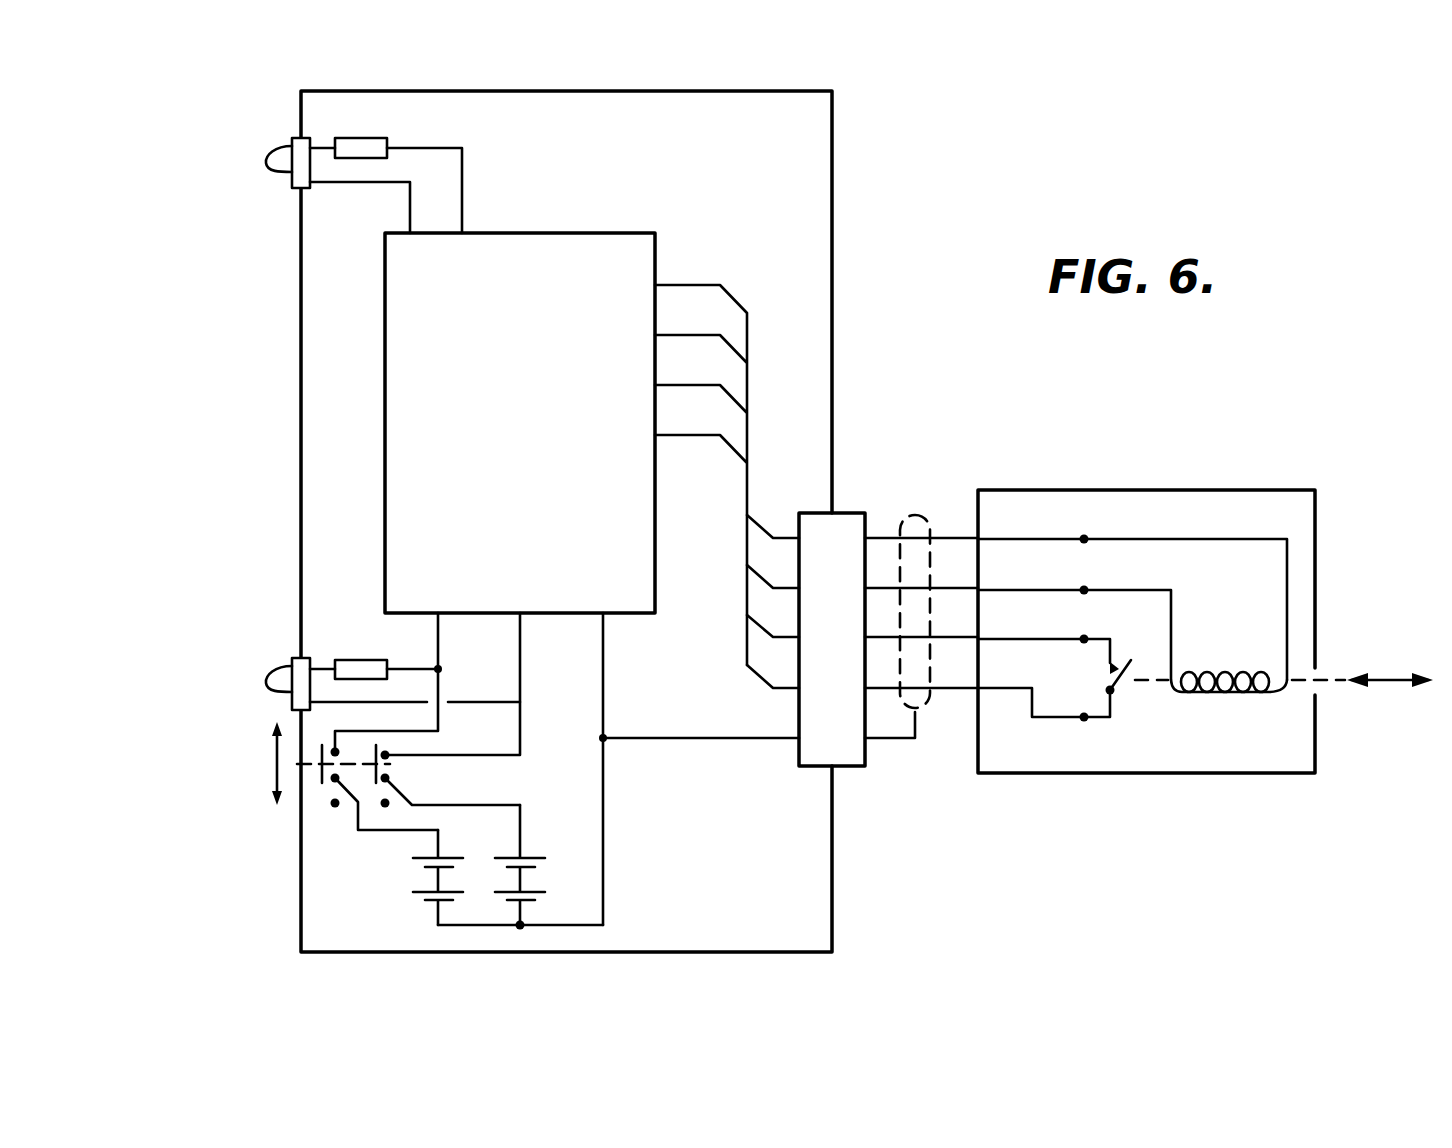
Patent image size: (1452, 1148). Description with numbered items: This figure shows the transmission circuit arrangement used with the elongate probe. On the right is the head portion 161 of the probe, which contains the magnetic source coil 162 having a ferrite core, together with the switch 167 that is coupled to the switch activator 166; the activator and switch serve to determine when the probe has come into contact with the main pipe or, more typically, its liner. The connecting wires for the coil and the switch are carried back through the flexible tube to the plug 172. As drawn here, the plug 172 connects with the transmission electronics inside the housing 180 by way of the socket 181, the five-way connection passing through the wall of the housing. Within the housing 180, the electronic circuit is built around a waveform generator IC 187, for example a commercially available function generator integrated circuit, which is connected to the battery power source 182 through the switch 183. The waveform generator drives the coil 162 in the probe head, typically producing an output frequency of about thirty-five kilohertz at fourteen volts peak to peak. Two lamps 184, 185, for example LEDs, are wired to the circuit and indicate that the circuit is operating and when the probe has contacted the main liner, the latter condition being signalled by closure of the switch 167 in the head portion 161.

The housing 180 is at (832, 198).
The waveform generator IC 187 is at (648, 498).
The socket 181 is at (800, 758).
The plug 172 is at (865, 757).
The battery power source 182 is at (526, 878).
The switch 183 is at (395, 768).
The lamp 184 is at (280, 692).
The lamp 185 is at (282, 166).
The head portion 161 is at (1197, 490).
The magnetic source coil 162 is at (1277, 628).
The switch activator 166 is at (1402, 684).
The switch 167 is at (1122, 688).